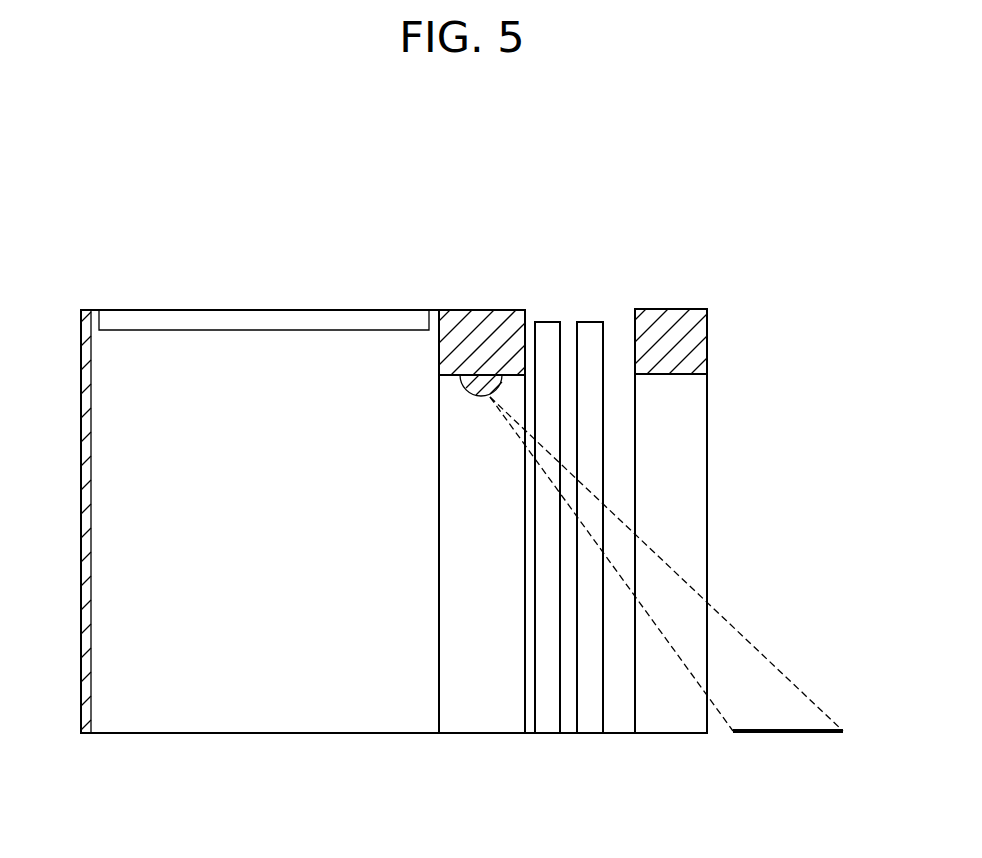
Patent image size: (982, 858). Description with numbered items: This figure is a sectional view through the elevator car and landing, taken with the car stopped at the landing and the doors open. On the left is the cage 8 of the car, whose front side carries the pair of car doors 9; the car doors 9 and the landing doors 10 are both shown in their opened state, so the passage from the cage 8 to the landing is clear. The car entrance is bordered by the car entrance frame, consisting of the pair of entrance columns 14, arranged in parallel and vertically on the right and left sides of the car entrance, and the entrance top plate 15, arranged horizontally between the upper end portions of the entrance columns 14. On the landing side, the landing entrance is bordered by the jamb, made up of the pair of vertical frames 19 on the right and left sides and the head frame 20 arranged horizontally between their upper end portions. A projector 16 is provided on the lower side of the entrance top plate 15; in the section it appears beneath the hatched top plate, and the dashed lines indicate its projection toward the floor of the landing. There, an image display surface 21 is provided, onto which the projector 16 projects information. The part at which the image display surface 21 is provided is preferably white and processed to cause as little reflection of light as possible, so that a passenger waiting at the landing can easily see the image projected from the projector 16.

The cage 8 is at (270, 713).
The car doors 9 is at (548, 322).
The landing doors 10 is at (590, 322).
The entrance columns 14 is at (484, 735).
The entrance top plate 15 is at (470, 310).
The projector 16 is at (468, 395).
The vertical frames 19 is at (668, 735).
The head frame 20 is at (675, 309).
The image display surface 21 is at (790, 737).